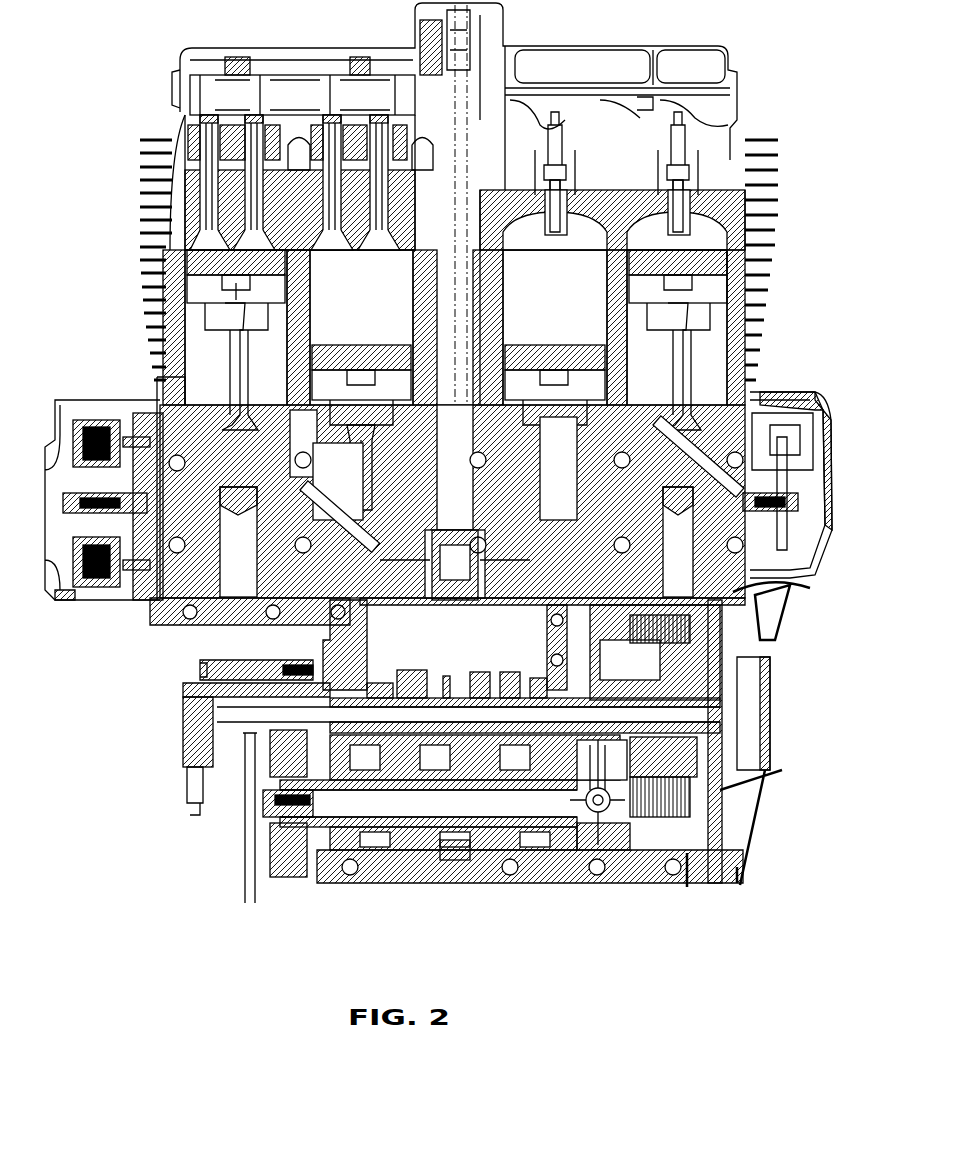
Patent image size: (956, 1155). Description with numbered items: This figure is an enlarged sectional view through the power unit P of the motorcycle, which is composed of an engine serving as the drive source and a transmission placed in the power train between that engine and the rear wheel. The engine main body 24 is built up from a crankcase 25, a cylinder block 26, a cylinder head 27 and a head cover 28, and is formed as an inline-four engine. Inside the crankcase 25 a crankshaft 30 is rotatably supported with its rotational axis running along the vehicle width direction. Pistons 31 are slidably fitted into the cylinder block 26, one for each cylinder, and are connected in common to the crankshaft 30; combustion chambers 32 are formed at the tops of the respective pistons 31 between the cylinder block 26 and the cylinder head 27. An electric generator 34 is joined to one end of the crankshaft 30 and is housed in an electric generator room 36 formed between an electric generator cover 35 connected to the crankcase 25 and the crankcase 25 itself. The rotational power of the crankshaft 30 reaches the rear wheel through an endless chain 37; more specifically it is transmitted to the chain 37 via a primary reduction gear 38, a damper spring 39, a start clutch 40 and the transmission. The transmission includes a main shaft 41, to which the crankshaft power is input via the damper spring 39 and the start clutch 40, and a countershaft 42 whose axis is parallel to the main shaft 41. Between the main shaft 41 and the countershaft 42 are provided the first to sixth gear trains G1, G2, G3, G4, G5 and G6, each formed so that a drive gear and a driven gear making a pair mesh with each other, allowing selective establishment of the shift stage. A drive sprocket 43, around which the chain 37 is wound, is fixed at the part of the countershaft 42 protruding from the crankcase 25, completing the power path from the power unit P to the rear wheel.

The engine main body 24 is at (155, 372).
The crankcase 25 is at (340, 632).
The cylinder block 26 is at (158, 272).
The cylinder head 27 is at (185, 175).
The head cover 28 is at (187, 50).
The crankshaft 30 is at (420, 570).
The piston 31 is at (218, 306).
The combustion chamber 32 is at (369, 287).
The electric generator 34 is at (100, 600).
The electric generator cover 35 is at (66, 403).
The electric generator room 36 is at (72, 602).
The chain 37 is at (298, 870).
The primary reduction gear 38 is at (614, 590).
The damper spring 39 is at (610, 812).
The start clutch 40 is at (738, 640).
The main shaft 41 is at (447, 676).
The countershaft 42 is at (342, 862).
The drive sprocket 43 is at (275, 850).
The first gear train G1 is at (540, 688).
The second gear train G2 is at (380, 680).
The third gear train G3 is at (447, 890).
The fourth gear train G4 is at (479, 670).
The fifth gear train G5 is at (506, 668).
The sixth gear train G6 is at (416, 667).
The power unit P is at (355, 655).